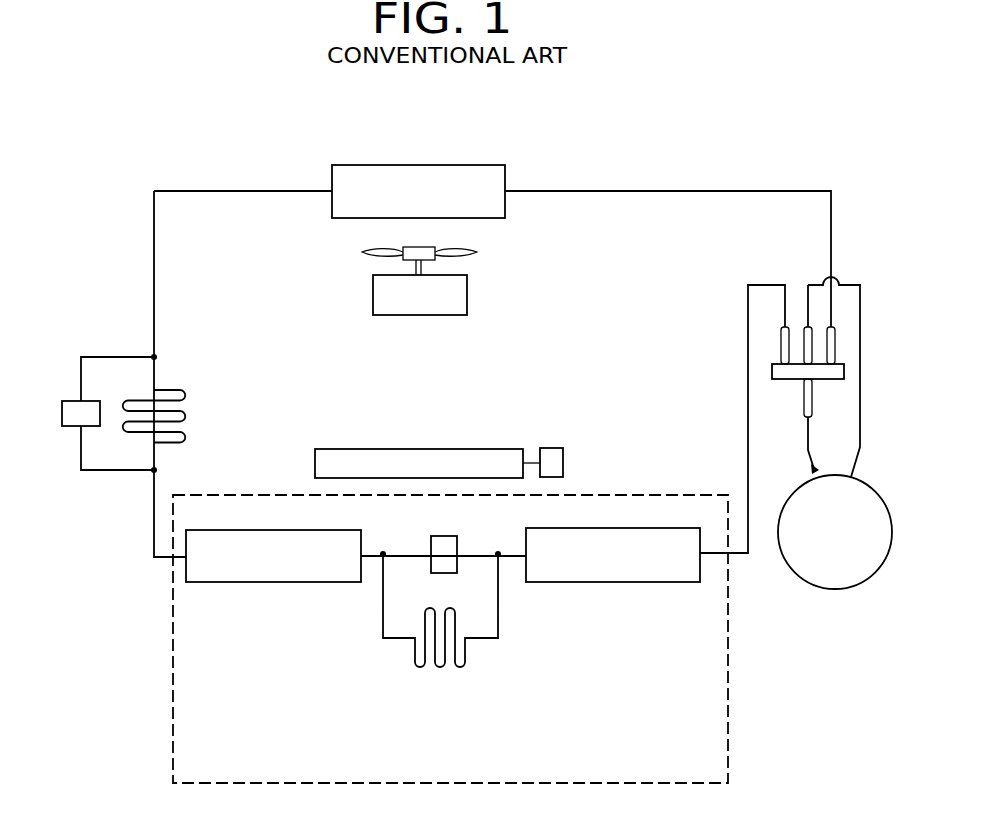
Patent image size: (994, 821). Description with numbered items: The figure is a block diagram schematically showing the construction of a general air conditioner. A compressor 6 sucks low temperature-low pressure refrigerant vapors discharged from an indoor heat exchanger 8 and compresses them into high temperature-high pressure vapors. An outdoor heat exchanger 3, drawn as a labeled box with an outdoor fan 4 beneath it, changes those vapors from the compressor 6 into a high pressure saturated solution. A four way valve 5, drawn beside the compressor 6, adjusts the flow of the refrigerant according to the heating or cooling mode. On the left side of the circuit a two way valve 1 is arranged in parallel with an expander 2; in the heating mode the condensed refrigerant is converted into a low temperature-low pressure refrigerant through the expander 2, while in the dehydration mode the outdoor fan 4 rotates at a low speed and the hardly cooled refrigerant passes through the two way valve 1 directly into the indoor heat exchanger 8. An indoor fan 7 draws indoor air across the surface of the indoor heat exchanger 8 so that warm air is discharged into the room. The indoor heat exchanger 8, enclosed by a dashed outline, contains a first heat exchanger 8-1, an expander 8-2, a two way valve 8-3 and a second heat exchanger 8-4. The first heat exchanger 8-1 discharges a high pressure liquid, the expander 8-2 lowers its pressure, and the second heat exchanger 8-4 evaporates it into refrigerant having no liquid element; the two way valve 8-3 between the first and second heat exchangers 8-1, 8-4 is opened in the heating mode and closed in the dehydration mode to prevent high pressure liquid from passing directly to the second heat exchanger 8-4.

The two way valve 1 is at (68, 399).
The expander 2 is at (187, 393).
The outdoor heat exchanger 3 is at (418, 165).
The outdoor fan 4 is at (468, 296).
The four way valve 5 is at (781, 345).
The compressor 6 is at (835, 590).
The indoor fan 7 is at (420, 449).
The indoor heat exchanger 8 is at (173, 640).
The first heat exchanger 8-1 is at (275, 583).
The expander 8-2 is at (441, 668).
The two way valve 8-3 is at (456, 566).
The second heat exchanger 8-4 is at (615, 583).